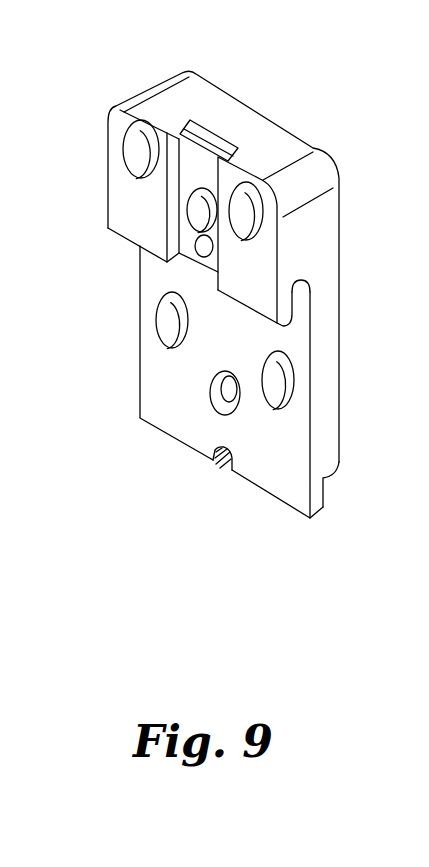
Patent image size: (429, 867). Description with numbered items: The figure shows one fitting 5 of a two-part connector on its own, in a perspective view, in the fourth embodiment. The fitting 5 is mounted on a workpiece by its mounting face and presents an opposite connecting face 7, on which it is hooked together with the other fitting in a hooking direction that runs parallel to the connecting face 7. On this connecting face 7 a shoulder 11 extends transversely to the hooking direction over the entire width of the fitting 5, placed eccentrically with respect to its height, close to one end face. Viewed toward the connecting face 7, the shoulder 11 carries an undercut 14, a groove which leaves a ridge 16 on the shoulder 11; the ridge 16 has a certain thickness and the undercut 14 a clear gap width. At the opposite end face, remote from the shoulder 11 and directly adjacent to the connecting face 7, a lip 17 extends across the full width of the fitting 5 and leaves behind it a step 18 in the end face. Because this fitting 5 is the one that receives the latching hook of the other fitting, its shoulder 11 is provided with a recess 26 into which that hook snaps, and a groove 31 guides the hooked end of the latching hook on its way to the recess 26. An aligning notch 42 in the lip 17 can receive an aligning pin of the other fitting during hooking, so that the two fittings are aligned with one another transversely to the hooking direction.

The fitting 5 is at (328, 233).
The connecting face 7 is at (144, 384).
The shoulder 11 is at (118, 208).
The undercut 14 is at (302, 290).
The ridge 16 is at (285, 313).
The lip 17 is at (320, 507).
The step 18 is at (332, 478).
The recess 26 is at (212, 140).
The groove 31 is at (196, 172).
The aligning notch 42 is at (226, 460).